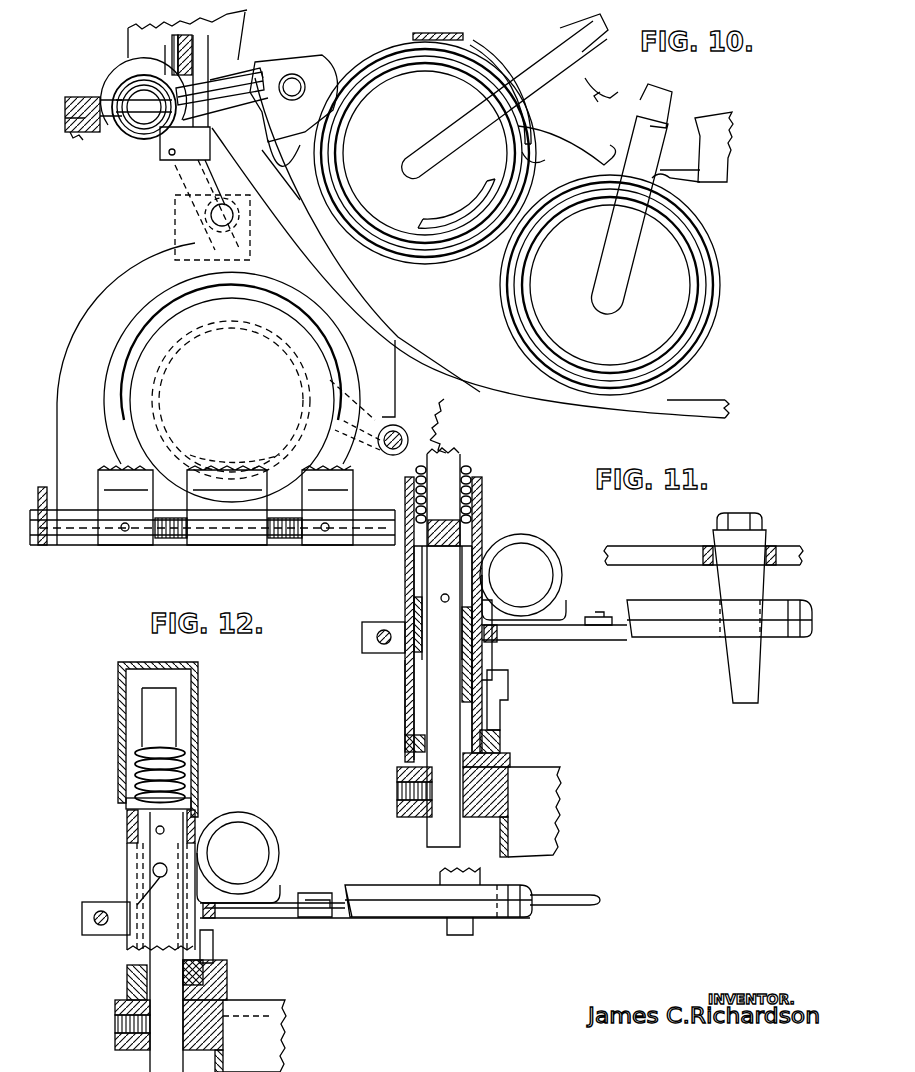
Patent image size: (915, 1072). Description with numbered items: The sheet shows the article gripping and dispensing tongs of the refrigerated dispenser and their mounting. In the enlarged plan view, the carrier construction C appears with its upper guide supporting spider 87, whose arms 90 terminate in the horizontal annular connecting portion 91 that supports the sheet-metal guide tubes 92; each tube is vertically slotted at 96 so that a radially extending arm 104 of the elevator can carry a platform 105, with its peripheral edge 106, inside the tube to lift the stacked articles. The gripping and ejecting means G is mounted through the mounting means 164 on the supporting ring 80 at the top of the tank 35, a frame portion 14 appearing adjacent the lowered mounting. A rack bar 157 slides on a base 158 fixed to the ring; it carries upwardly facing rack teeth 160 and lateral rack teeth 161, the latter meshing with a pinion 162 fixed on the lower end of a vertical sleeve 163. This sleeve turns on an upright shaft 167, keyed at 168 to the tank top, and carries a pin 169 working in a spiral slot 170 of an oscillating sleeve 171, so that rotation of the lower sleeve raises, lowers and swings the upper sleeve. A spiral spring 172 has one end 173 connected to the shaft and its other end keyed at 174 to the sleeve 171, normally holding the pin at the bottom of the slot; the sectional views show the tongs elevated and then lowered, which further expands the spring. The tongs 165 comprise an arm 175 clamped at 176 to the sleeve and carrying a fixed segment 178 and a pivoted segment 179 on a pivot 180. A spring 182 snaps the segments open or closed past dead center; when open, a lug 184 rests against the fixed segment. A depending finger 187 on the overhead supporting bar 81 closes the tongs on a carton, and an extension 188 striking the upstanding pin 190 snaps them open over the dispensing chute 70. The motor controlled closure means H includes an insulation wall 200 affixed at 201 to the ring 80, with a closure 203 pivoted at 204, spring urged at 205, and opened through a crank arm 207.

In FIG. 12, the frame 14 is at (119, 844).
In FIG. 12, the tank 35 is at (266, 1056).
In FIG. 10, the dispensing chute 70 is at (118, 402).
In FIG. 10, the supporting ring 80 is at (470, 265).
In FIG. 11, the supporting ring 80 is at (492, 816).
In FIG. 12, the supporting ring 80 is at (136, 1050).
In FIG. 11, the overhead supporting bar 81 is at (788, 548).
In FIG. 10, the upper guide supporting spider 87 is at (610, 86).
In FIG. 10, the spider arms 90 is at (596, 120).
In FIG. 10, the annular connecting portion 91 is at (646, 406).
In FIG. 10, the guide tube 92 is at (530, 163).
In FIG. 10, the vertical slot 96 is at (663, 190).
In FIG. 10, the radially extending arm 104 is at (516, 68).
In FIG. 10, the platform 105 is at (516, 218).
In FIG. 10, the peripheral edge 106 is at (412, 262).
In FIG. 10, the rack bar 157 is at (170, 42).
In FIG. 11, the rack bar 157 is at (496, 702).
In FIG. 12, the rack bar 157 is at (208, 948).
In FIG. 10, the base 158 is at (215, 30).
In FIG. 11, the base 158 is at (512, 758).
In FIG. 12, the base 158 is at (226, 990).
In FIG. 10, the rack teeth 160 is at (130, 46).
In FIG. 11, the rack teeth 160 is at (500, 640).
In FIG. 10, the lateral rack teeth 161 is at (166, 52).
In FIG. 11, the lateral rack teeth 161 is at (500, 728).
In FIG. 11, the pinion 162 is at (410, 745).
In FIG. 12, the pinion 162 is at (127, 986).
In FIG. 11, the vertical sleeve 163 is at (420, 707).
In FIG. 11, the mounting means 164 is at (401, 600).
In FIG. 10, the gripping and ejecting tongs 165 is at (241, 127).
In FIG. 11, the gripping and ejecting tongs 165 is at (632, 647).
In FIG. 10, the upright shaft 167 is at (135, 100).
In FIG. 11, the upright shaft 167 is at (427, 836).
In FIG. 12, the upright shaft 167 is at (165, 727).
In FIG. 11, the key 168 is at (400, 790).
In FIG. 12, the key 168 is at (115, 1028).
In FIG. 11, the pin 169 is at (414, 620).
In FIG. 12, the pin 169 is at (136, 864).
In FIG. 11, the spiral slot 170 is at (402, 654).
In FIG. 12, the spiral slot 170 is at (153, 873).
In FIG. 10, the oscillating sleeve 171 is at (150, 140).
In FIG. 11, the oscillating sleeve 171 is at (480, 548).
In FIG. 12, the oscillating sleeve 171 is at (200, 832).
In FIG. 10, the spiral spring 172 is at (140, 125).
In FIG. 11, the spiral spring 172 is at (472, 490).
In FIG. 12, the spiral spring 172 is at (186, 766).
In FIG. 11, the spring end 173 is at (446, 466).
In FIG. 11, the key 174 is at (410, 547).
In FIG. 12, the key 174 is at (126, 806).
In FIG. 10, the arm 175 is at (220, 97).
In FIG. 11, the arm 175 is at (554, 641).
In FIG. 12, the arm 175 is at (266, 919).
In FIG. 10, the clamp 176 is at (100, 122).
In FIG. 12, the clamp 176 is at (96, 902).
In FIG. 10, the fixed segment 178 is at (360, 188).
In FIG. 11, the fixed segment 178 is at (680, 612).
In FIG. 12, the fixed segment 178 is at (400, 918).
In FIG. 10, the pivoted segment 179 is at (492, 66).
In FIG. 11, the pivoted segment 179 is at (627, 620).
In FIG. 12, the pivoted segment 179 is at (522, 916).
In FIG. 10, the pivot 180 is at (294, 98).
In FIG. 11, the pivot 180 is at (600, 616).
In FIG. 12, the pivot 180 is at (324, 882).
In FIG. 10, the spring 182 is at (228, 86).
In FIG. 11, the spring 182 is at (545, 558).
In FIG. 12, the spring 182 is at (260, 832).
In FIG. 10, the lug 184 is at (290, 170).
In FIG. 10, the depending finger 187 is at (443, 40).
In FIG. 11, the depending finger 187 is at (730, 690).
In FIG. 12, the depending finger 187 is at (465, 935).
In FIG. 10, the extension 188 is at (572, 46).
In FIG. 10, the upstanding pin 190 is at (402, 434).
In FIG. 10, the insulation wall 200 is at (82, 336).
In FIG. 10, the attachment 201 is at (212, 212).
In FIG. 10, the closure 203 is at (164, 480).
In FIG. 10, the pivot 204 is at (222, 530).
In FIG. 10, the spring 205 is at (212, 492).
In FIG. 10, the crank arm 207 is at (44, 487).
In FIG. 10, the carrier construction C is at (716, 346).
In FIG. 10, the gripping and ejecting means G is at (460, 216).
In FIG. 12, the gripping and ejecting means G is at (113, 711).
In FIG. 10, the motor controlled closure means H is at (140, 518).